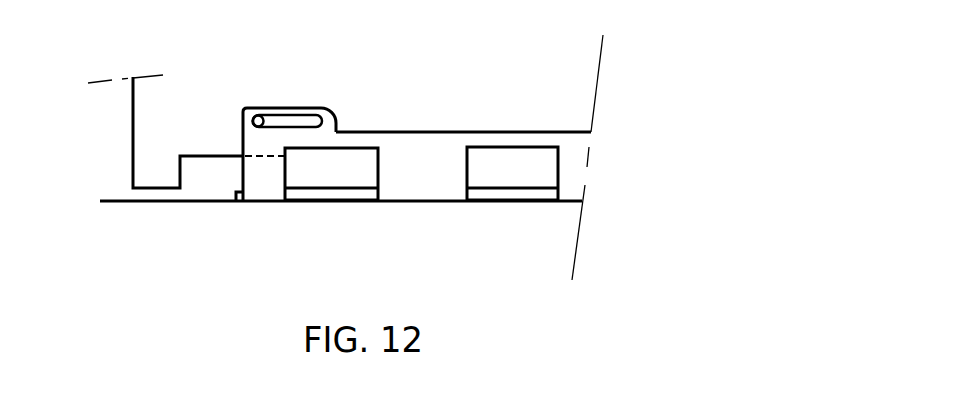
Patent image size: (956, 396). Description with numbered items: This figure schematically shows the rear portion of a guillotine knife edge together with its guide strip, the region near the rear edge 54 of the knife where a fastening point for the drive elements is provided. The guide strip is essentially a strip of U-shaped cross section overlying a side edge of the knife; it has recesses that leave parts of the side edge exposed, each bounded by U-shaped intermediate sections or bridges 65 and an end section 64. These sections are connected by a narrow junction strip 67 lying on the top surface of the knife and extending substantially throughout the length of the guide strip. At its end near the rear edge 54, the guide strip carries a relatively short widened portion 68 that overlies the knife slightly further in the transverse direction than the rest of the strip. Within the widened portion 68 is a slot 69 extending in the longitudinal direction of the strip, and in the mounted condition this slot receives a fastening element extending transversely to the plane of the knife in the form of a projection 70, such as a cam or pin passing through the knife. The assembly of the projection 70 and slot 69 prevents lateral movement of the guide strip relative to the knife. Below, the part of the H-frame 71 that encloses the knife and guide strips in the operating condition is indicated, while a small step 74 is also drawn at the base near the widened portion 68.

The rear edge 54 is at (132, 125).
The end section 64 is at (272, 182).
The intermediate section 65 is at (430, 170).
The junction strip 67 is at (463, 132).
The widened portion 68 is at (332, 110).
The slot 69 is at (293, 113).
The projection 70 is at (255, 117).
The H-frame part 71 is at (346, 201).
The notch 74 is at (238, 203).